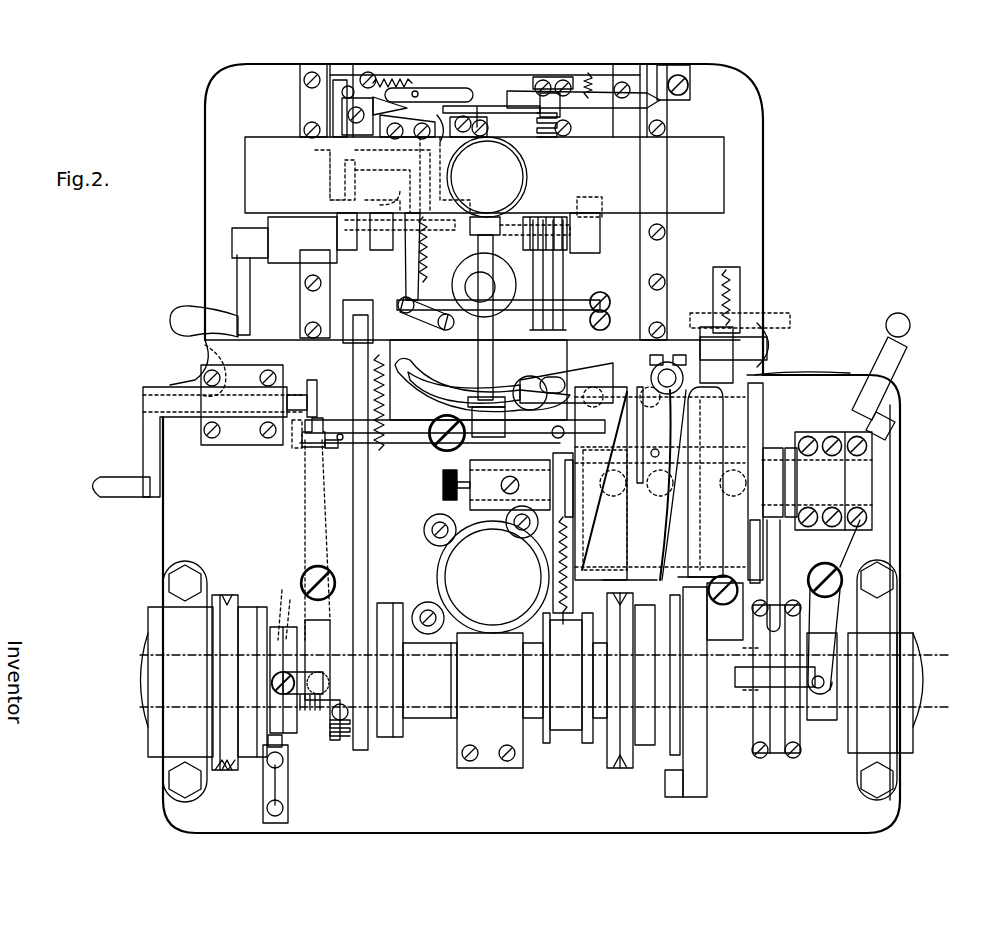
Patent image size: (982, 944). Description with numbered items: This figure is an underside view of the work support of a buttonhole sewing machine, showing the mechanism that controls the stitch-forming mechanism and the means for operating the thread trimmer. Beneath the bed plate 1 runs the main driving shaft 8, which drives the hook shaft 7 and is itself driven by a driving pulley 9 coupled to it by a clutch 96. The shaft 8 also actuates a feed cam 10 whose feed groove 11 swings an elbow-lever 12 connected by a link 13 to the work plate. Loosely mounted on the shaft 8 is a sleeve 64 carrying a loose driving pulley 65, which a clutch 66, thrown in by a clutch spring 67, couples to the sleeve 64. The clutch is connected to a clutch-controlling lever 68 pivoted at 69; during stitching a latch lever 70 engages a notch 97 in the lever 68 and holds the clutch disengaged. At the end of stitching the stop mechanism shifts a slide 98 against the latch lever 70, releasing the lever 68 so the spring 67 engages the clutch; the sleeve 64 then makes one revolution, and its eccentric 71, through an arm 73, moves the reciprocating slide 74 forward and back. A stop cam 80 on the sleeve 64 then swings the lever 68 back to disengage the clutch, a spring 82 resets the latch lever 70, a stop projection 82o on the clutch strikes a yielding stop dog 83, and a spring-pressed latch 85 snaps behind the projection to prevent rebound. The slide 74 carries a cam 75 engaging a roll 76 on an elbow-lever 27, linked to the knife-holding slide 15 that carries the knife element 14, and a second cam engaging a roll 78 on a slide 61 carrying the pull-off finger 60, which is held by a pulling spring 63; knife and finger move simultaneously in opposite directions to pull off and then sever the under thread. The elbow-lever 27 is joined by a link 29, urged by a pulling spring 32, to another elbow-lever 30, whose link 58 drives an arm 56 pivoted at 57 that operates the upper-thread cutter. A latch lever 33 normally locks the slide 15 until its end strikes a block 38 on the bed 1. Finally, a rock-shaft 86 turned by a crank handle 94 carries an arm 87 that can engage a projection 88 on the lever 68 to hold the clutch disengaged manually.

The bed plate 1 is at (735, 127).
The block 38 is at (690, 108).
The roll 78 is at (342, 92).
The pulling spring 63 is at (430, 80).
The slide 61 is at (470, 90).
The pull-off finger 60 is at (500, 90).
The knife-holding slide 15 is at (413, 133).
The roll 76 is at (588, 95).
The latch lever 33 is at (618, 107).
The elbow-lever 27 is at (318, 150).
The cam 75 is at (412, 175).
The shaft 7 is at (490, 255).
The reciprocating slide 74 is at (350, 277).
The pulling spring 32 is at (428, 265).
The link 29 is at (405, 280).
The elbow-lever 30 is at (418, 318).
The link 58 is at (540, 302).
The link 13 is at (505, 345).
The elbow-lever 12 is at (582, 368).
The pivot 57 is at (595, 322).
The arm 56 is at (605, 312).
The slide 98 is at (693, 360).
The latch lever 70 is at (410, 452).
The feed cam 10 is at (652, 537).
The feed groove 11 is at (593, 548).
The rock-shaft 86 is at (205, 355).
The crank handle 94 is at (150, 435).
The arm 87 is at (305, 385).
The projection 88 is at (318, 418).
The notch 97 is at (340, 435).
The spring 82 is at (375, 385).
The arm 73 is at (370, 553).
The clutch-controlling lever 68 is at (300, 487).
The main driving shaft 8 is at (490, 705).
The loose driving pulley 65 is at (226, 580).
The clutch 66 is at (250, 600).
The sleeve 64 is at (276, 605).
The knife element 14 is at (298, 625).
The pivot 69 is at (330, 583).
The stop cam 80 is at (310, 700).
The yielding stop dog 83 is at (230, 760).
The spring-pressed latch 85 is at (288, 788).
The stop projection 82o is at (268, 760).
The clutch spring 67 is at (330, 745).
The eccentric 71 is at (385, 740).
The driving pulley 9 is at (615, 770).
The clutch 96 is at (665, 738).